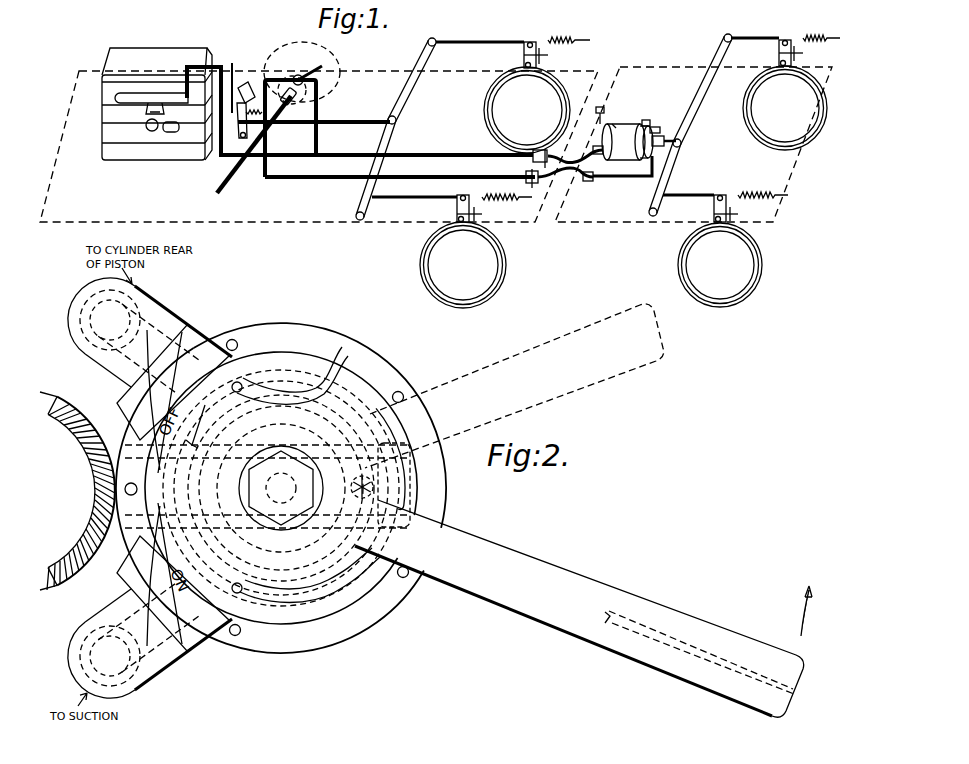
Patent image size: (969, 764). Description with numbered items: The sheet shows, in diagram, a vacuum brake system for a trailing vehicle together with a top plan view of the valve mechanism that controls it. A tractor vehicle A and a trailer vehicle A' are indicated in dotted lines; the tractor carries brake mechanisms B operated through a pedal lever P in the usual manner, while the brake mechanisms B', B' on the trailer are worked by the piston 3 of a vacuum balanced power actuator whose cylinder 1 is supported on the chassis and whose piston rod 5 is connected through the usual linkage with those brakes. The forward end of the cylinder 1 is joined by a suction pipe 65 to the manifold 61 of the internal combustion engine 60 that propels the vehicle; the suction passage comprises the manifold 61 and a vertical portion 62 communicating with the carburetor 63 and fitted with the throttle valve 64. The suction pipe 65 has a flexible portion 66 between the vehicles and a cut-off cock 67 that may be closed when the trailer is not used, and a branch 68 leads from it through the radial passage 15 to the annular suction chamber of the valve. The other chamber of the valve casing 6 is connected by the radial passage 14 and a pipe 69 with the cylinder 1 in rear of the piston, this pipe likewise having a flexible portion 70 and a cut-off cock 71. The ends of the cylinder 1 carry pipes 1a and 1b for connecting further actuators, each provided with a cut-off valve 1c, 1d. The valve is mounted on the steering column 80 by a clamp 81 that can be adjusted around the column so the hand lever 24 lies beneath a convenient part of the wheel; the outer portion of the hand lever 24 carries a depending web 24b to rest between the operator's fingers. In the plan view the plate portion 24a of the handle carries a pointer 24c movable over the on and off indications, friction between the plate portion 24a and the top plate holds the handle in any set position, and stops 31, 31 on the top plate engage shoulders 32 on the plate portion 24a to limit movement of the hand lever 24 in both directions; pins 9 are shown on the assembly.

In FIG. 1, the cylinder 1 is at (618, 126).
In FIG. 1, the pipe 1a is at (597, 110).
In FIG. 1, the pipe 1b is at (647, 120).
In FIG. 1, the cut-off valve 1c is at (614, 124).
In FIG. 1, the cut-off valve 1d is at (658, 127).
In FIG. 1, the piston 3 is at (646, 126).
In FIG. 1, the piston rod 5 is at (660, 136).
In FIG. 1, the valve casing 6 is at (296, 76).
In FIG. 2, the pins 9 is at (236, 341).
In FIG. 2, the radial passage 14 is at (213, 346).
In FIG. 2, the radial passage 15 is at (200, 640).
In FIG. 1, the hand lever 24 is at (312, 70).
In FIG. 2, the hand lever 24 is at (535, 568).
In FIG. 2, the plate portion 24a is at (330, 600).
In FIG. 2, the depending web 24b is at (660, 643).
In FIG. 2, the pointer 24c is at (202, 417).
In FIG. 2, the stops 31 is at (241, 383).
In FIG. 2, the shoulders 32 is at (346, 350).
In FIG. 1, the internal combustion engine 60 is at (146, 62).
In FIG. 1, the manifold 61 is at (115, 98).
In FIG. 1, the vertical portion 62 is at (146, 112).
In FIG. 1, the carburetor 63 is at (172, 133).
In FIG. 1, the throttle valve 64 is at (150, 131).
In FIG. 1, the suction pipe 65 is at (420, 157).
In FIG. 1, the flexible portion 66 is at (578, 155).
In FIG. 1, the cut-off cock 67 is at (530, 154).
In FIG. 1, the branch 68 is at (317, 130).
In FIG. 2, the branch 68 is at (160, 666).
In FIG. 1, the pipe 69 is at (334, 179).
In FIG. 2, the pipe 69 is at (183, 340).
In FIG. 1, the flexible portion 70 is at (560, 180).
In FIG. 1, the cut-off cock 71 is at (524, 178).
In FIG. 1, the steering column 80 is at (228, 180).
In FIG. 2, the steering column 80 is at (124, 490).
In FIG. 1, the clamp 81 is at (290, 104).
In FIG. 2, the clamp 81 is at (66, 583).
In FIG. 1, the tractor vehicle A is at (319, 130).
In FIG. 1, the trailer vehicle A' is at (693, 129).
In FIG. 1, the brake mechanisms B is at (495, 187).
In FIG. 1, the brake mechanisms B' is at (752, 186).
In FIG. 1, the pedal lever P is at (245, 90).